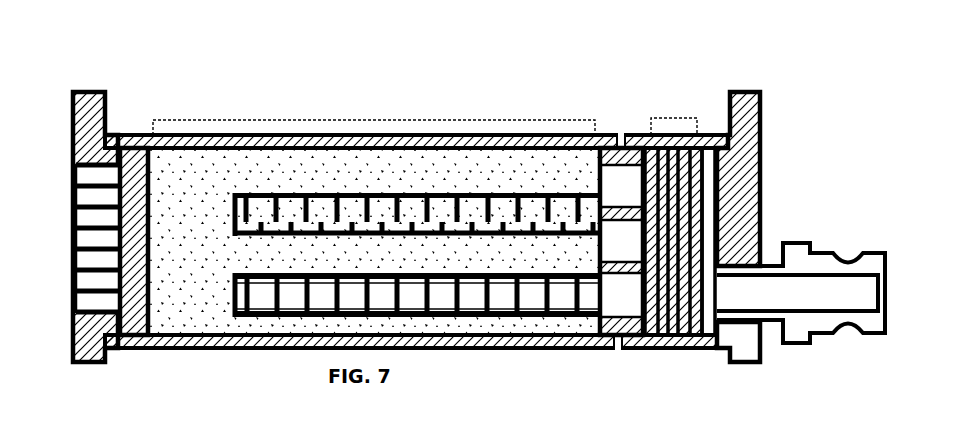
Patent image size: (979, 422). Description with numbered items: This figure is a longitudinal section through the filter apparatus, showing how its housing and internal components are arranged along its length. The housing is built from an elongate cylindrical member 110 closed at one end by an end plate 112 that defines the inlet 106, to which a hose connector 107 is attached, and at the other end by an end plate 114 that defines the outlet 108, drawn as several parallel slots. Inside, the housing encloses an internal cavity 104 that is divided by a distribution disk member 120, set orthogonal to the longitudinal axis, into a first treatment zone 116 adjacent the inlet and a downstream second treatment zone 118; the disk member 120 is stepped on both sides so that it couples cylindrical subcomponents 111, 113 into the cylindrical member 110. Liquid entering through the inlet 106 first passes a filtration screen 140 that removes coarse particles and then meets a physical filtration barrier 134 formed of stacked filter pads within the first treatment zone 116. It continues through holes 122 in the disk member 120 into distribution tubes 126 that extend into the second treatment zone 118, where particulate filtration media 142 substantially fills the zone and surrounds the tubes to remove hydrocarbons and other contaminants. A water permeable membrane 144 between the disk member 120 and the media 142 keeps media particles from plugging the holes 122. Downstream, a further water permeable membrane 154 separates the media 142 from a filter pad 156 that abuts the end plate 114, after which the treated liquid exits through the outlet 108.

The internal cavity 104 is at (359, 179).
The inlet 106 is at (732, 292).
The hose connector 107 is at (833, 258).
The outlet 108 is at (87, 222).
The cylindrical member 110 is at (427, 137).
The cylindrical subcomponent 111 is at (307, 146).
The end plate 112 is at (757, 95).
The cylindrical subcomponent 113 is at (641, 143).
The end plate 114 is at (92, 92).
The first treatment zone 116 is at (679, 118).
The second treatment zone 118 is at (380, 120).
The distribution disk member 120 is at (620, 328).
The holes 122 is at (607, 187).
The distribution tubes 126 is at (469, 296).
The physical filtration barrier 134 is at (683, 312).
The filtration screen 140 is at (708, 160).
The particulate filtration media 142 is at (190, 187).
The water permeable membrane 144 is at (602, 165).
The water permeable membrane 154 is at (152, 313).
The filter pad 156 is at (133, 170).